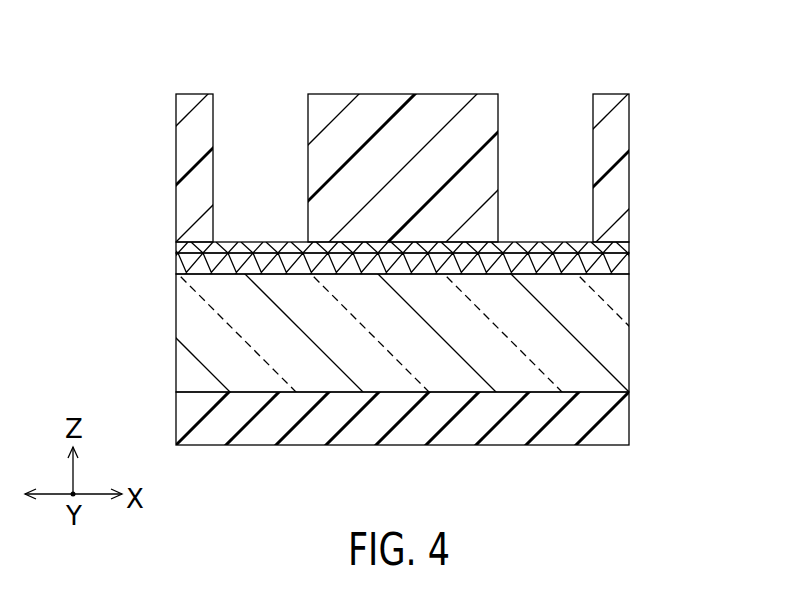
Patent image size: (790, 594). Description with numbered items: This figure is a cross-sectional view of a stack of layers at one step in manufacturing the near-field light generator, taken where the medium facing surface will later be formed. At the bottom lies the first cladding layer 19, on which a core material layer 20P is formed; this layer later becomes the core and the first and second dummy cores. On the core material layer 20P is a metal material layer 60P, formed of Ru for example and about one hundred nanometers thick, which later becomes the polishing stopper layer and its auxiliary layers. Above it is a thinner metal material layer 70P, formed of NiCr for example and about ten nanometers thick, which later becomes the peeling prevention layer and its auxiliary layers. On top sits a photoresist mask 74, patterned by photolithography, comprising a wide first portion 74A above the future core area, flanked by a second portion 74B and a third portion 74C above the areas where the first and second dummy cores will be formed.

The photoresist mask 74 is at (336, 88).
The first portion 74A is at (405, 93).
The second portion 74B is at (193, 93).
The third portion 74C is at (610, 93).
The metal material layer 70P is at (629, 248).
The metal material layer 60P is at (629, 263).
The core material layer 20P is at (629, 345).
The first cladding layer 19 is at (629, 412).